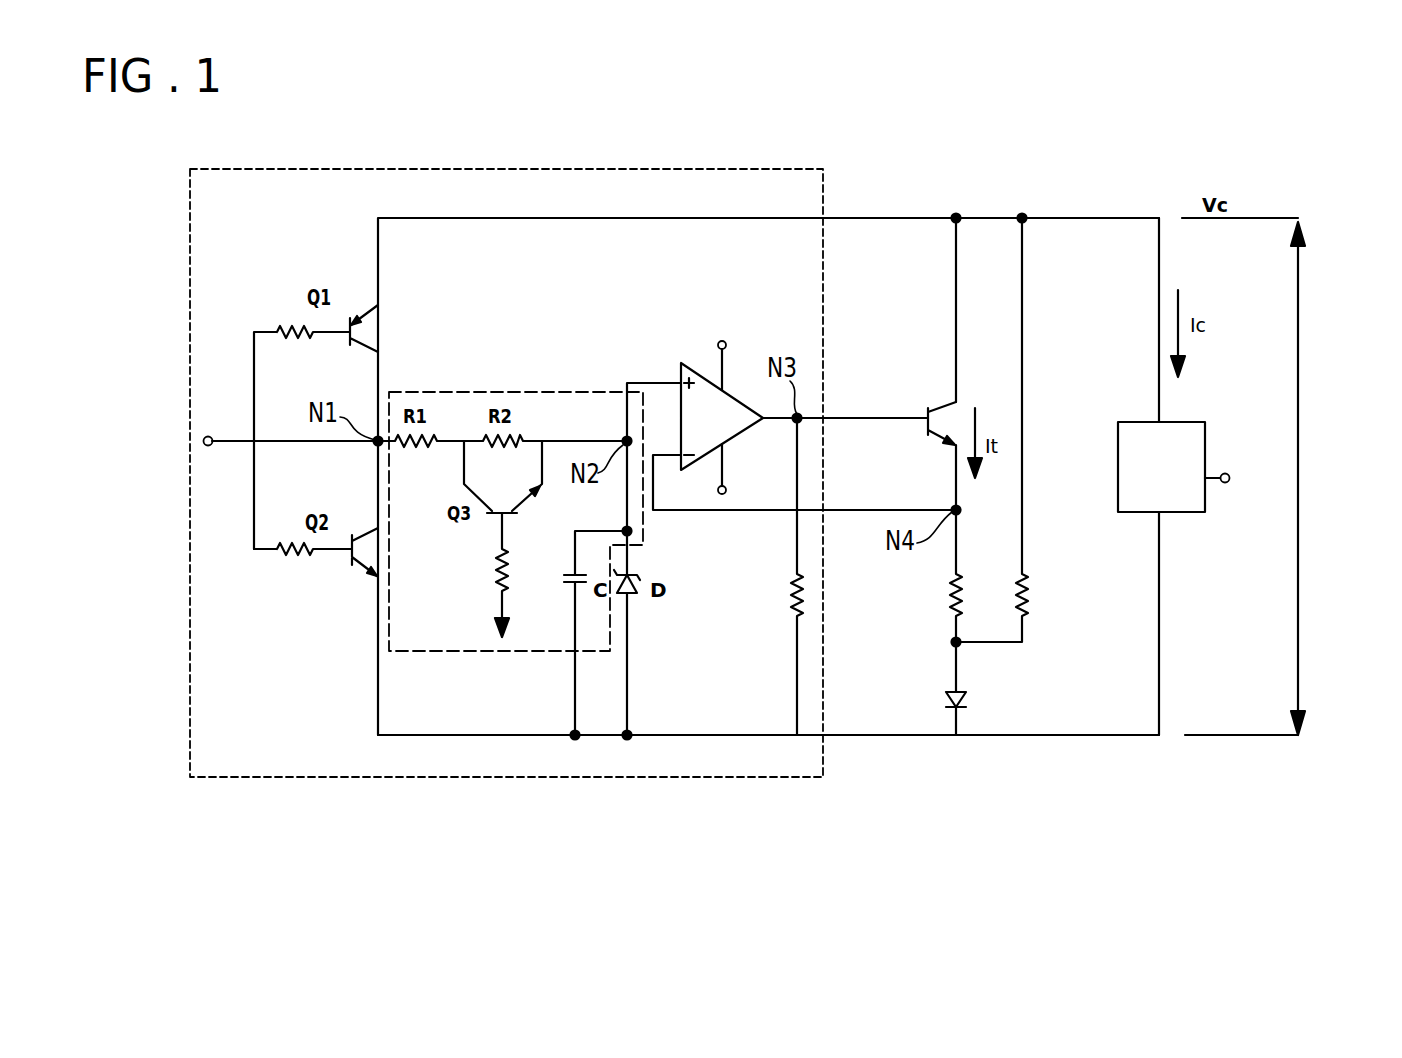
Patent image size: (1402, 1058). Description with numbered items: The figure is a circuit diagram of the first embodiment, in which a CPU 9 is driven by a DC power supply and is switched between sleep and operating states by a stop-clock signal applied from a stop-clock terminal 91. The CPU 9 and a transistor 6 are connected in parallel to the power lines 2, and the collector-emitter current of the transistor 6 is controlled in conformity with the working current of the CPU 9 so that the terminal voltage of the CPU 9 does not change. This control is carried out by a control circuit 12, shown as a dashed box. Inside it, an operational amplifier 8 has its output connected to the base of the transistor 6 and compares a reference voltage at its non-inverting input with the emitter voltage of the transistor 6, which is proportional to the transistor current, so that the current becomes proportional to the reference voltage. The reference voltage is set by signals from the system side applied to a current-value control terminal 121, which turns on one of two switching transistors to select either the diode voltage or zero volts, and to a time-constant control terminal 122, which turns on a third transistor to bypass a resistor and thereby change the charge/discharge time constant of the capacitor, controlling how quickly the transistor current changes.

The current-value control terminal 121 is at (205, 438).
The transistor 6 is at (933, 405).
The power lines 2 is at (1046, 218).
The operational amplifier 8 is at (697, 362).
The CPU 9 is at (1125, 513).
The stop-clock terminal 91 is at (1226, 484).
The time-constant control terminal 122 is at (492, 632).
The control circuit 12 is at (718, 780).